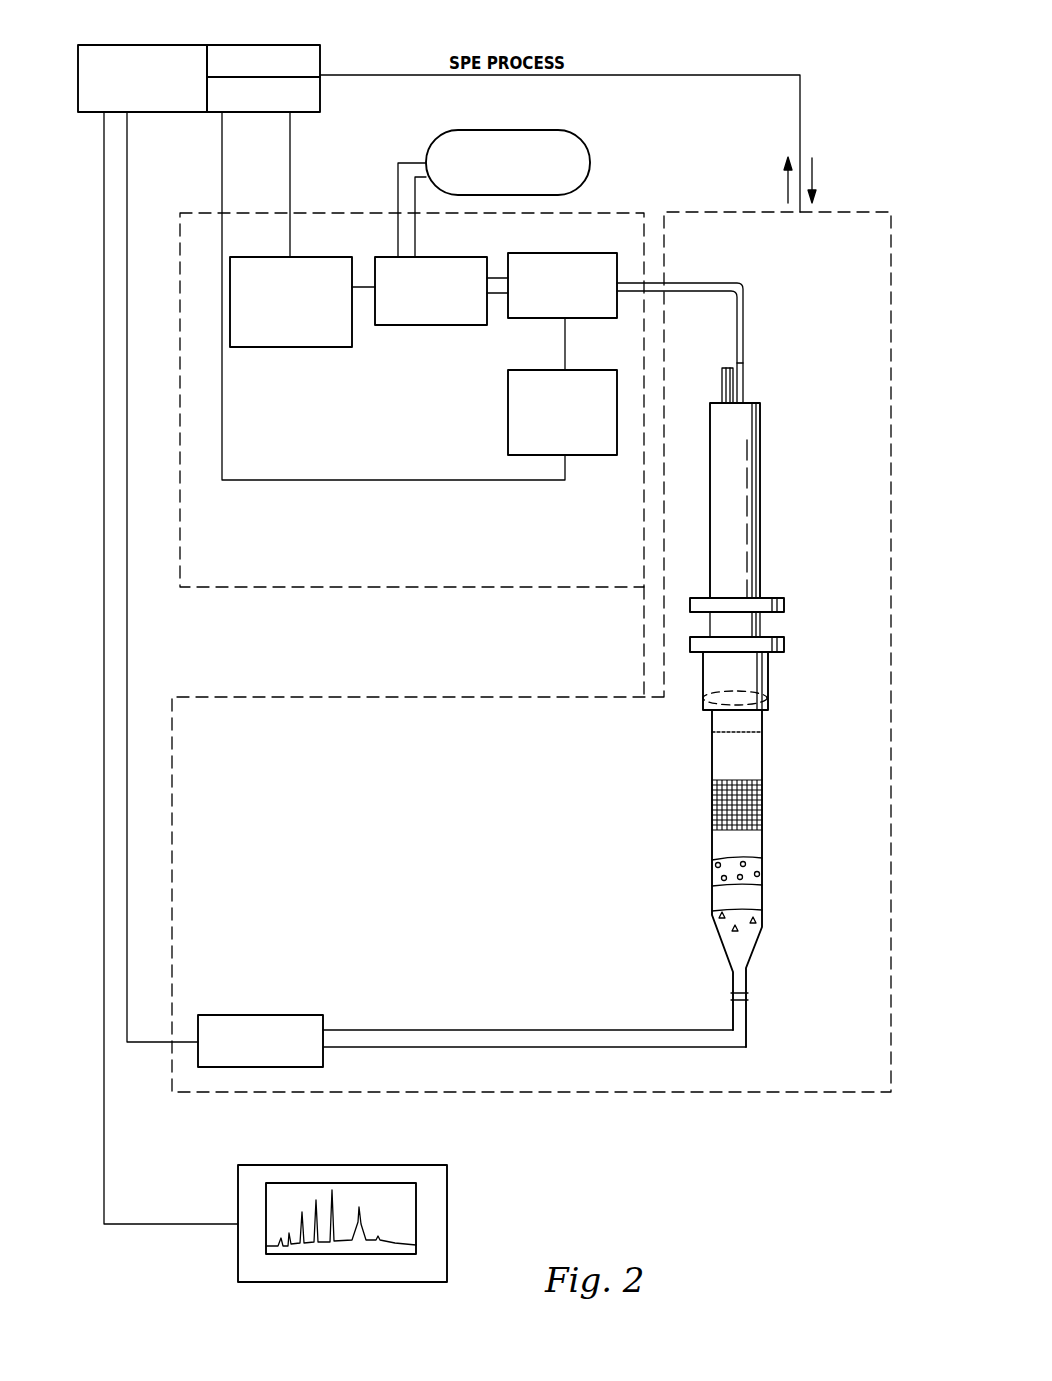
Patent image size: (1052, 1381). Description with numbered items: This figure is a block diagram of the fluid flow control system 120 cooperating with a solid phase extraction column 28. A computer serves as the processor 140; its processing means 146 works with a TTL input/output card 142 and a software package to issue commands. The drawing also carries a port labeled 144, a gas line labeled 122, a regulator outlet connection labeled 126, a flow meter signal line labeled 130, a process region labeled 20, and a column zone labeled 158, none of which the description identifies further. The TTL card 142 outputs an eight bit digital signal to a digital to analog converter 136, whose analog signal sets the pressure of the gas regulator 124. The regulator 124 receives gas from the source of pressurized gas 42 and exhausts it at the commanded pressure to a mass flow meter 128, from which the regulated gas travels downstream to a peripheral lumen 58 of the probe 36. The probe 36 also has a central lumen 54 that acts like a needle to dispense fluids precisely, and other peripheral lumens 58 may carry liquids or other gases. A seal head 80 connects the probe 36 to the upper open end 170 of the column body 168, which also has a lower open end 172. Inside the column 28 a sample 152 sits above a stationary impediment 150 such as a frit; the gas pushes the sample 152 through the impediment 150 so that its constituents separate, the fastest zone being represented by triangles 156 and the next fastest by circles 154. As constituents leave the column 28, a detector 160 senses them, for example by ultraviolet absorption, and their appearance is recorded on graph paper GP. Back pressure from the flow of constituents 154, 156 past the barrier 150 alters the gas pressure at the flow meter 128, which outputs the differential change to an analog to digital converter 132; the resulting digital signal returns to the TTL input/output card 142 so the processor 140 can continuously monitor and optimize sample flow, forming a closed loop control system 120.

The processor 140 is at (95, 36).
The processing means 146 is at (148, 45).
The COM port 144 is at (320, 63).
The TTL input/output card 142 is at (320, 101).
The source of pressurized gas 42 is at (590, 150).
The gas supply line 122 is at (398, 190).
The fluid flow control system 120 is at (272, 557).
The digital to analog converter 136 is at (296, 252).
The gas regulator 124 is at (430, 252).
The gas line 126 is at (500, 300).
The flow meter 128 is at (545, 252).
The flow meter signal line 130 is at (565, 346).
The analog to digital converter 132 is at (508, 403).
The SPE process 20 is at (260, 767).
The central lumen 54 is at (736, 362).
The peripheral lumen 58 is at (720, 381).
The probe 36 is at (762, 482).
The seal head 80 is at (768, 662).
The upper open end 170 is at (750, 700).
The column 28 is at (792, 836).
The column body 168 is at (765, 748).
The sample 152 is at (718, 753).
The impediment 150 is at (715, 790).
The circles 154 is at (723, 878).
The eluate region 158 is at (752, 898).
The triangles 156 is at (723, 913).
The lower open end 172 is at (748, 990).
The detector 160 is at (265, 1015).
The graph paper GP is at (440, 1196).